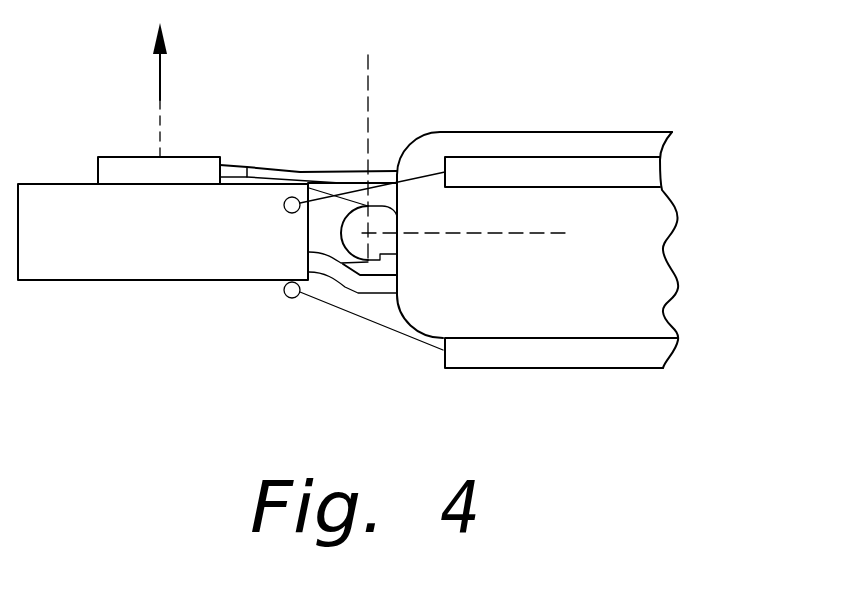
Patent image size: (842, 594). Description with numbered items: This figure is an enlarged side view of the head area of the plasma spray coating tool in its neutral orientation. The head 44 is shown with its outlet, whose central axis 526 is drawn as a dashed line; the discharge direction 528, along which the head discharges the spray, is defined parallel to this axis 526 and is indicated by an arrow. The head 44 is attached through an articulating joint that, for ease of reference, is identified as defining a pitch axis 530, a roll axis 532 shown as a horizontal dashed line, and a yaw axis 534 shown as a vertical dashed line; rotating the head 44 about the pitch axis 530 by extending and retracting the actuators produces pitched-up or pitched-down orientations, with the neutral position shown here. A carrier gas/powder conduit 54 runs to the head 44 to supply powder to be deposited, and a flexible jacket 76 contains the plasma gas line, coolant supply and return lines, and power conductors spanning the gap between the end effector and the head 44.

The head 44 is at (182, 268).
The carrier gas/powder conduit/line 54 is at (323, 172).
The flexible jacket 76 is at (342, 277).
The central axis 526 is at (162, 125).
The discharge direction 528 is at (157, 90).
The pitch axis 530 is at (372, 207).
The roll axis 532 is at (487, 235).
The yaw axis 534 is at (370, 90).